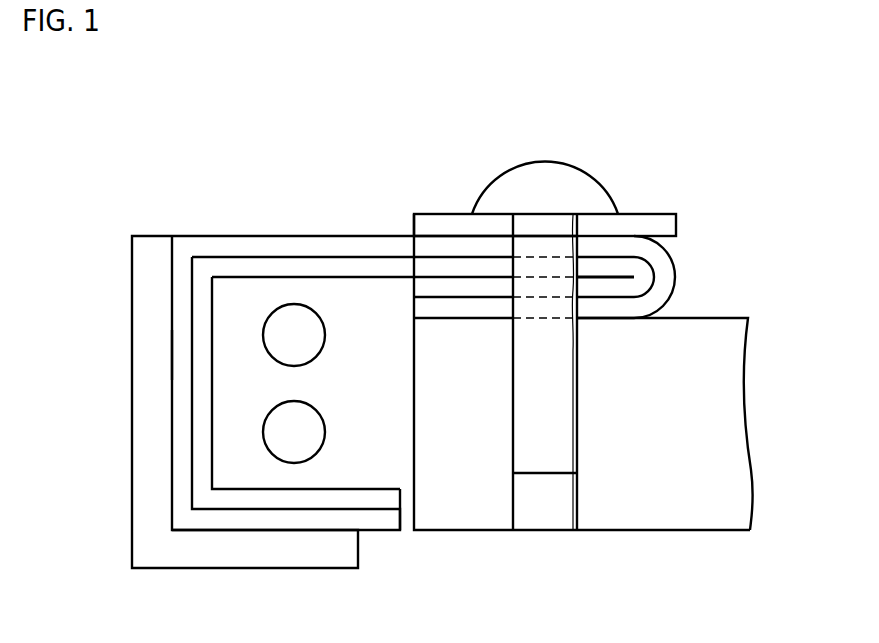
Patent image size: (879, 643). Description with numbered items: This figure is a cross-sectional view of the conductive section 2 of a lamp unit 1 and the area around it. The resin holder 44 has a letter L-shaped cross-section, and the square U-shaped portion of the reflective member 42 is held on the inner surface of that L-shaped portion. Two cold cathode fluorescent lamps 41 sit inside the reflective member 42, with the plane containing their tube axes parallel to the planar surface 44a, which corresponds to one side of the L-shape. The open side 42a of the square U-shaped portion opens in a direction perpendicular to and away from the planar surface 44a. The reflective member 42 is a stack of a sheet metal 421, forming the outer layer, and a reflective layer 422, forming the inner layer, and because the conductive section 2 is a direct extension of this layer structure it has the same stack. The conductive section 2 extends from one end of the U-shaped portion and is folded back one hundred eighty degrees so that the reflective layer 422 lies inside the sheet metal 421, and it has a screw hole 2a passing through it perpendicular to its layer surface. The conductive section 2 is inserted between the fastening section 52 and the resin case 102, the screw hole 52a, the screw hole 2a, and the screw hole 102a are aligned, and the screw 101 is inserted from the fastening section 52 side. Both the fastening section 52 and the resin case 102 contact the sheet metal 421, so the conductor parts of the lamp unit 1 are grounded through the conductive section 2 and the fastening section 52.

The lamp unit 1 is at (366, 125).
The conductive section 2 is at (750, 247).
The screw hole 2a is at (568, 268).
The cold cathode fluorescent lamps 41 is at (312, 420).
The reflective member 42 is at (386, 388).
The open side 42a is at (407, 395).
The resin holder 44 is at (320, 560).
The planar surface 44a is at (172, 352).
The fastening section 52 is at (665, 223).
The screw hole 52a is at (568, 225).
The screw 101 is at (557, 175).
The resin case 102 is at (647, 517).
The screw hole 102a is at (573, 417).
The sheet metal 421 is at (182, 410).
The reflective layer 422 is at (202, 437).